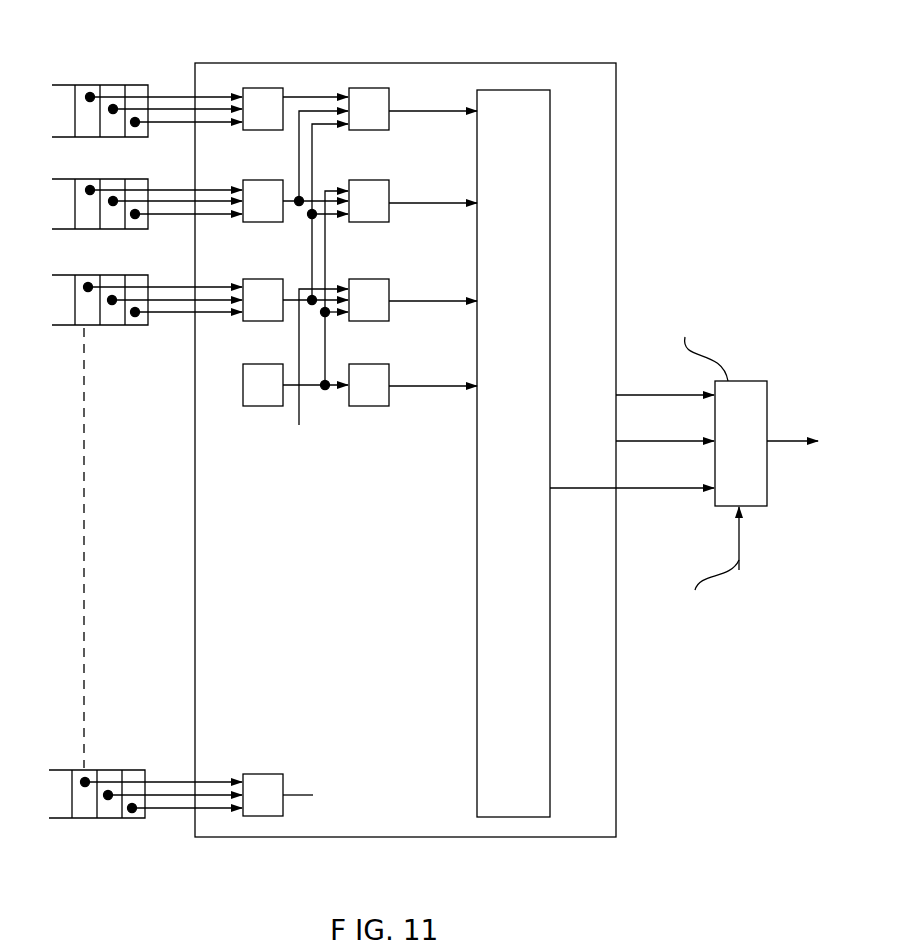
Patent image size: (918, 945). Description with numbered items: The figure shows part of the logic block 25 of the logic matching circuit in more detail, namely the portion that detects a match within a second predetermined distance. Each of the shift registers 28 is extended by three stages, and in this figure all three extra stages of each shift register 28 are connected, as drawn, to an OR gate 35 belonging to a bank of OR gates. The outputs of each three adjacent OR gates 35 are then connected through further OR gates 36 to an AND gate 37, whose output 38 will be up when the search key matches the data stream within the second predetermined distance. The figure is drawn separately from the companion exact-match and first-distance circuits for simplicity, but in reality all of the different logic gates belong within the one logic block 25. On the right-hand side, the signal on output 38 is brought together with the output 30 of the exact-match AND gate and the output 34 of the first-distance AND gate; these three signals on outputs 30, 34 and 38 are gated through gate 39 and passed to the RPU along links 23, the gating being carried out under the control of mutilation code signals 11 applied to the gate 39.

The shift registers 28 is at (106, 78).
The OR gate 35 is at (264, 86).
The OR gates 36 is at (359, 86).
The logic block 25 is at (433, 62).
The AND gate 37 is at (551, 307).
The output 30 is at (665, 394).
The output 34 is at (665, 441).
The output 38 is at (665, 488).
The gate 39 is at (755, 381).
The links 23 is at (808, 437).
The mutilation code signals 11 is at (740, 545).